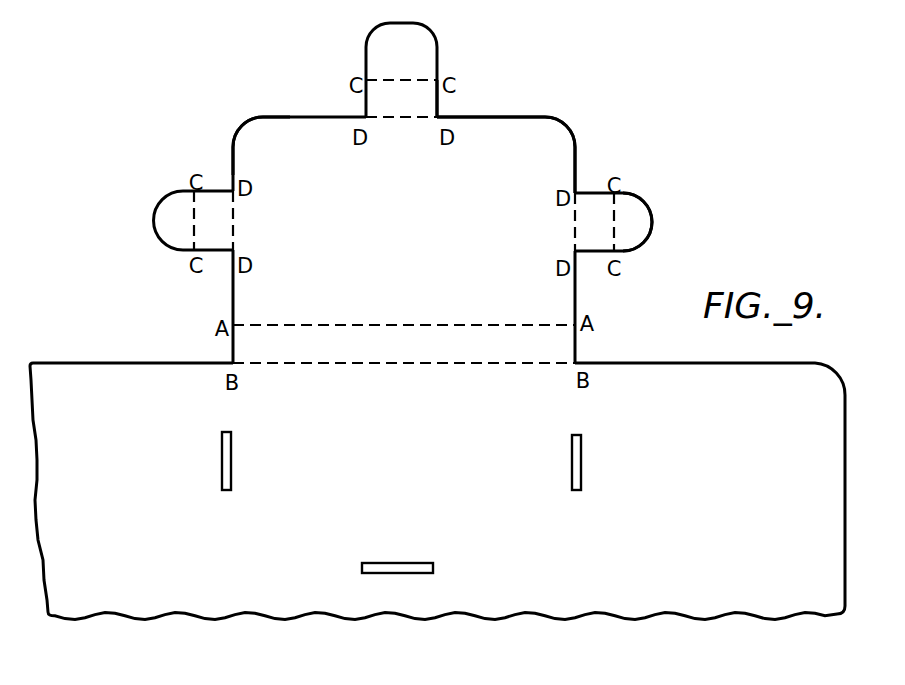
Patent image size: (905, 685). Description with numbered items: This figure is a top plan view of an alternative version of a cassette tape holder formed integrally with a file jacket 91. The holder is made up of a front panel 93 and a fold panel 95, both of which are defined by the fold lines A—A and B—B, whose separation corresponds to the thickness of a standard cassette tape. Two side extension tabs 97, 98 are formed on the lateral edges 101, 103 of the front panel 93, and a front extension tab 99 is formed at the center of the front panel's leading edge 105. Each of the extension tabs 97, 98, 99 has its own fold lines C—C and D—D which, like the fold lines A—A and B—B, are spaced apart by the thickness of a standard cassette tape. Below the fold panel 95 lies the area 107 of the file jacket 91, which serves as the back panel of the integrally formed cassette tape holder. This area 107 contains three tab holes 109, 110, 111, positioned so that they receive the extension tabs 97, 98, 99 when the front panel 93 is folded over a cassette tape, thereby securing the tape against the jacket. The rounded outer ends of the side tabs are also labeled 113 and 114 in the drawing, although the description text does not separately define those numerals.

The file jacket 91 is at (830, 475).
The front panel 93 is at (416, 241).
The fold panel 95 is at (421, 355).
The side extension tab 97 is at (217, 192).
The side extension tab 98 is at (589, 201).
The front extension tab 99 is at (428, 100).
The lateral edge 101 is at (233, 160).
The lateral edge 103 is at (576, 155).
The leading edge 105 is at (498, 117).
The area of the file jacket 107 is at (423, 467).
The tab hole 109 is at (220, 437).
The tab hole 110 is at (582, 468).
The tab hole 111 is at (400, 573).
The top tab 113 is at (430, 53).
The rounded end 114 is at (640, 220).